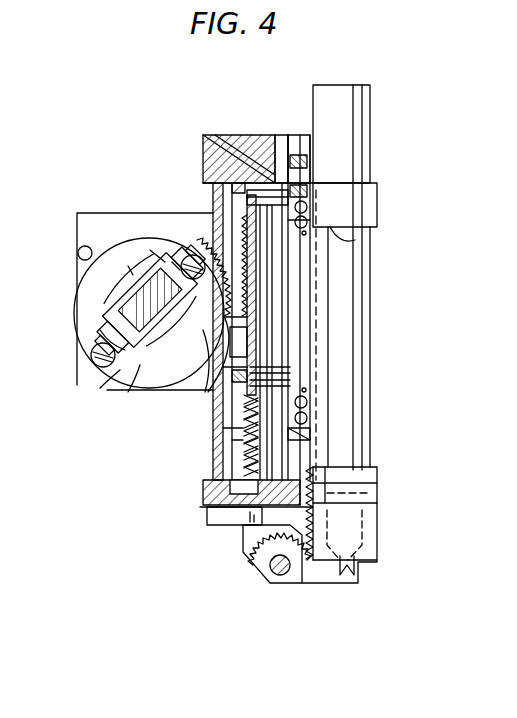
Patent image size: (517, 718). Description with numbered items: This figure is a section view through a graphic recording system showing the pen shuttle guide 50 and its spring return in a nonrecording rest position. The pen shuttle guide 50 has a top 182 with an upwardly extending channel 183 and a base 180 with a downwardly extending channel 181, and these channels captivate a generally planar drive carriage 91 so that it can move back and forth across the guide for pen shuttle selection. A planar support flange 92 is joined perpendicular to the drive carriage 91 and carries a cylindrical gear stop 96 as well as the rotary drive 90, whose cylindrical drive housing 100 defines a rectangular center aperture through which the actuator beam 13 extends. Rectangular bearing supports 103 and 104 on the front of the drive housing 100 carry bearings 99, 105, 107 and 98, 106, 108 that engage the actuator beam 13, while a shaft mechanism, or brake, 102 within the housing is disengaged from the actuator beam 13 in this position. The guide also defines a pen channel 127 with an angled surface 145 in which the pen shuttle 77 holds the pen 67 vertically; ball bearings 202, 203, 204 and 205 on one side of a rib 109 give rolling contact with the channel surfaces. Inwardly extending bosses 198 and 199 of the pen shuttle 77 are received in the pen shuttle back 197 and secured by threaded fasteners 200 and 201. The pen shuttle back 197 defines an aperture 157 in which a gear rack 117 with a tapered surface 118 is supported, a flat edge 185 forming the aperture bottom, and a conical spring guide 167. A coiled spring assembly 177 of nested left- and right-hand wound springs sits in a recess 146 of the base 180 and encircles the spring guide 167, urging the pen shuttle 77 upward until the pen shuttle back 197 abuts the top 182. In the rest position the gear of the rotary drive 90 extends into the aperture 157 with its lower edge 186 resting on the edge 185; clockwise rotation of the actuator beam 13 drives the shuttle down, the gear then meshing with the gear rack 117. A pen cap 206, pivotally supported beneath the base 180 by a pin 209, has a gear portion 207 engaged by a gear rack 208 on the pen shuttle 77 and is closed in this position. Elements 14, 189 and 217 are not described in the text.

The actuator beam 13 is at (168, 326).
The housing wall 14 is at (262, 345).
The pen shuttle guide 50 is at (254, 133).
The pen 67 is at (368, 104).
The pen shuttle 77 is at (372, 210).
The rotary drive 90 is at (140, 398).
The drive carriage 91 is at (234, 427).
The support flange 92 is at (82, 213).
The gear stop 96 is at (88, 247).
The bearing 98 is at (110, 310).
The bearing 99 is at (160, 250).
The drive housing 100 is at (92, 360).
The shaft mechanism 102 is at (128, 266).
The bearing support 103 is at (178, 264).
The bearing support 104 is at (137, 372).
The bearing 105 is at (172, 262).
The bearing 106 is at (103, 374).
The bearing 107 is at (176, 244).
The bearing 108 is at (150, 350).
The rib 109 is at (302, 268).
The gear rack 117 is at (258, 283).
The tapered surface 118 is at (258, 302).
The pen channel 127 is at (282, 152).
The angled surface 145 is at (306, 140).
The recess 146 is at (217, 512).
The aperture 157 is at (262, 320).
The spring guide 167 is at (243, 437).
The coiled spring assembly 177 is at (243, 458).
The base 180 is at (366, 500).
The channel 181 is at (210, 483).
The top 182 is at (222, 140).
The channel 183 is at (218, 178).
The flat edge 185 is at (243, 392).
The lower edge 186 is at (262, 333).
The clip 189 is at (350, 565).
The pen shuttle back 197 is at (270, 356).
The boss 198 is at (296, 180).
The boss 199 is at (290, 373).
The threaded fastener 200 is at (228, 185).
The threaded fastener 201 is at (226, 396).
The ball bearing 202 is at (306, 202).
The ball bearing 203 is at (306, 226).
The ball bearing 204 is at (308, 402).
The ball bearing 205 is at (308, 418).
The pen cap 206 is at (332, 587).
The gear portion 207 is at (250, 572).
The gear rack 208 is at (314, 526).
The pin 209 is at (285, 577).
The stop 217 is at (372, 490).